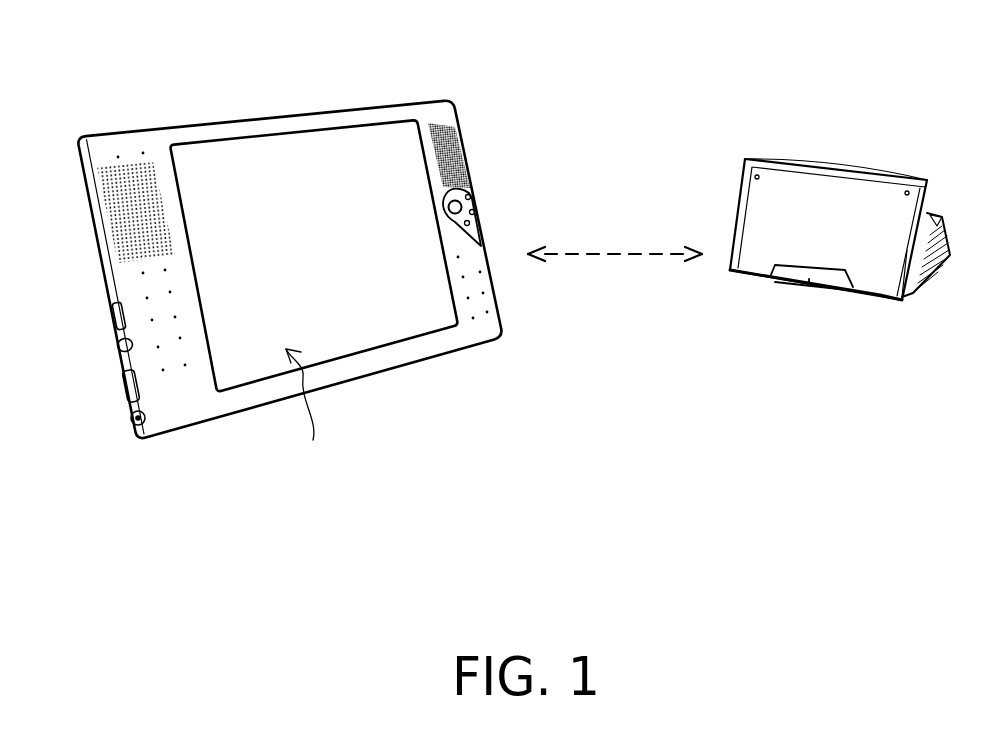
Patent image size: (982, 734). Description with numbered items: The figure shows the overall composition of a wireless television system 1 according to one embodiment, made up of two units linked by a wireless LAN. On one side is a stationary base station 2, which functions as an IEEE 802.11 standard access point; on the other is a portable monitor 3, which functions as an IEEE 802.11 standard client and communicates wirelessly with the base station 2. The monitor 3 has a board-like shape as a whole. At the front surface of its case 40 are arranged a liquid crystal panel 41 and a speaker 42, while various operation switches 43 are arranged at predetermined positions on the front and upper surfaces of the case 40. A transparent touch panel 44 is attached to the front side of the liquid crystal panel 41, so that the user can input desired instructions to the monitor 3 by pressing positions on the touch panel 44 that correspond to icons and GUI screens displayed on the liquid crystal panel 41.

The wireless television system 1 is at (896, 398).
The stationary base station 2 is at (875, 161).
The portable monitor 3 is at (288, 264).
The case 40 is at (170, 418).
The liquid crystal panel 41 is at (353, 325).
The speaker 42 is at (115, 222).
The operation switches 43 is at (490, 210).
The transparent touch panel 44 is at (307, 416).